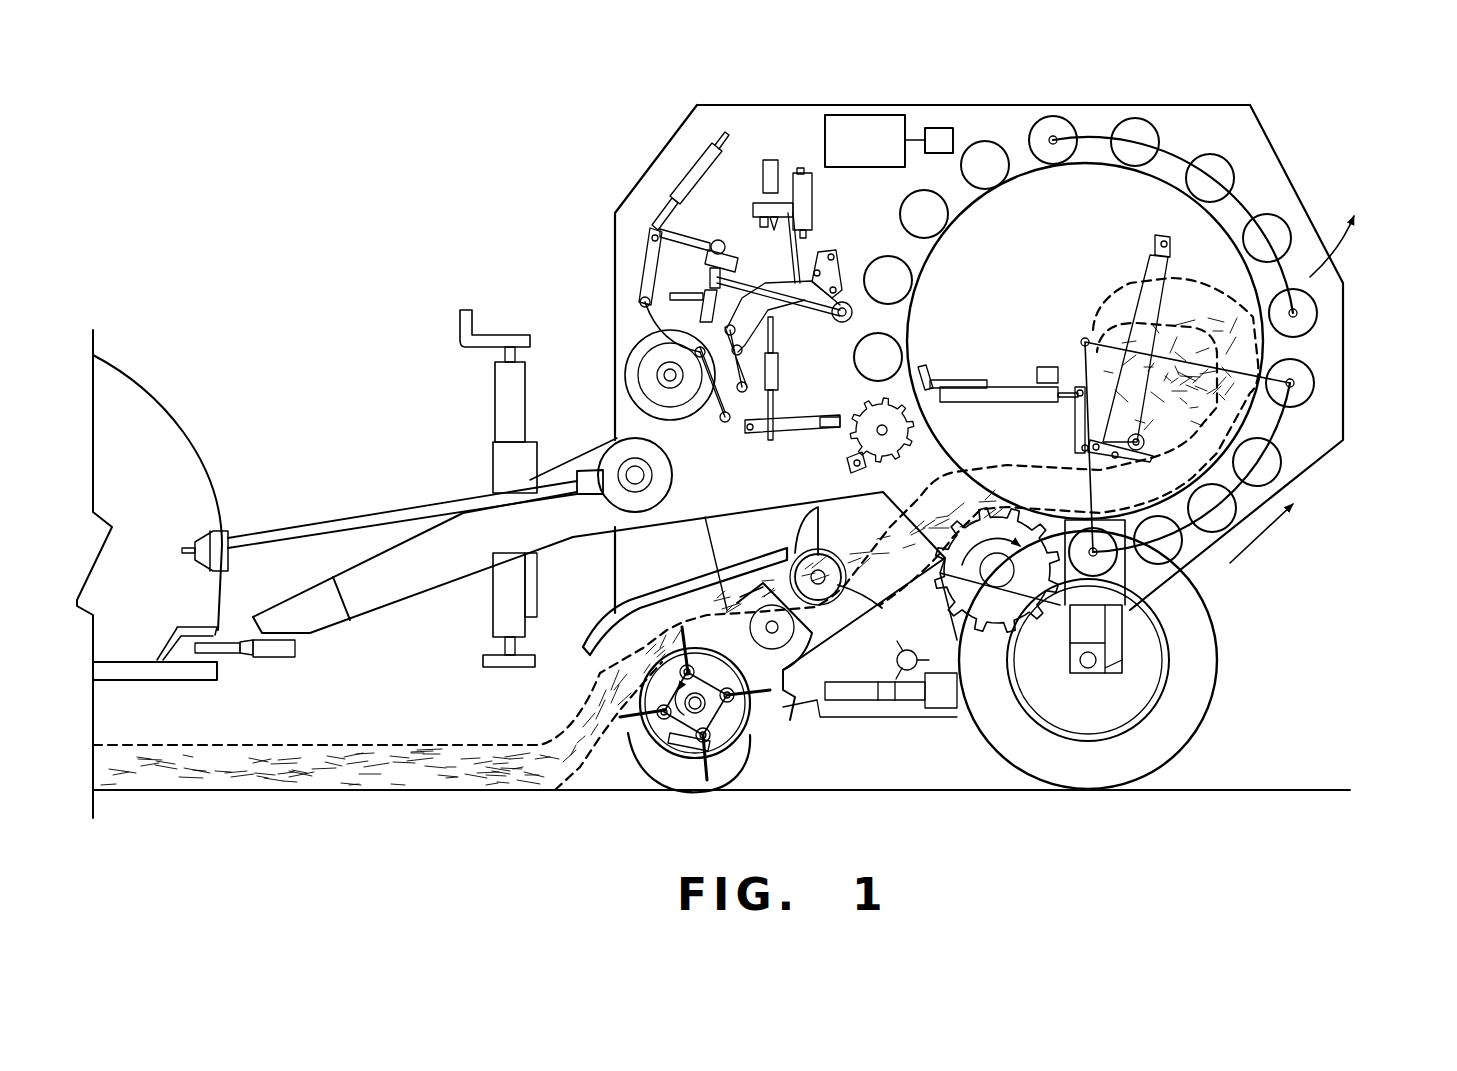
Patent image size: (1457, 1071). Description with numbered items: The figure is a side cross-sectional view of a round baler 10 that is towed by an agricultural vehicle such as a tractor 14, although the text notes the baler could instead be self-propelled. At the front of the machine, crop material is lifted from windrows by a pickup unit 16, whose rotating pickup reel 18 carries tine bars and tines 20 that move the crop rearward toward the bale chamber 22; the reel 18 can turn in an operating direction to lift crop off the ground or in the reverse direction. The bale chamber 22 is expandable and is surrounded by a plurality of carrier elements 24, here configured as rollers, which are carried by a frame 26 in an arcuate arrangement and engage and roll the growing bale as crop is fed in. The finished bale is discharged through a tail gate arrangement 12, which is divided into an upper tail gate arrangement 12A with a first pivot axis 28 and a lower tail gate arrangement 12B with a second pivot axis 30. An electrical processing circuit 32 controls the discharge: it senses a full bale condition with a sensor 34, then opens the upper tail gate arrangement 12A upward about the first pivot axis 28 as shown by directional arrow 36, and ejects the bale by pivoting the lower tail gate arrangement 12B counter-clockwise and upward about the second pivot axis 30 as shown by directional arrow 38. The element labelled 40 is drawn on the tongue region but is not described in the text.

The round baler 10 is at (612, 124).
The tail gate arrangement 12 is at (1254, 355).
The upper tail gate arrangement 12A is at (1238, 157).
The lower tail gate arrangement 12B is at (1203, 538).
The tractor 14 is at (162, 400).
The pickup unit 16 is at (676, 760).
The pickup reel 18 is at (671, 734).
The tines 20 is at (640, 702).
The bale chamber 22 is at (1003, 272).
The carrier elements 24 is at (1141, 125).
The frame 26 is at (740, 103).
The first pivot axis 28 is at (1053, 140).
The second pivot axis 30 is at (1083, 342).
The electrical processing circuit 32 is at (866, 115).
The sensor 34 is at (940, 128).
The directional arrow 36 is at (1350, 242).
The directional arrow 38 is at (1273, 535).
The tongue 40 is at (328, 527).